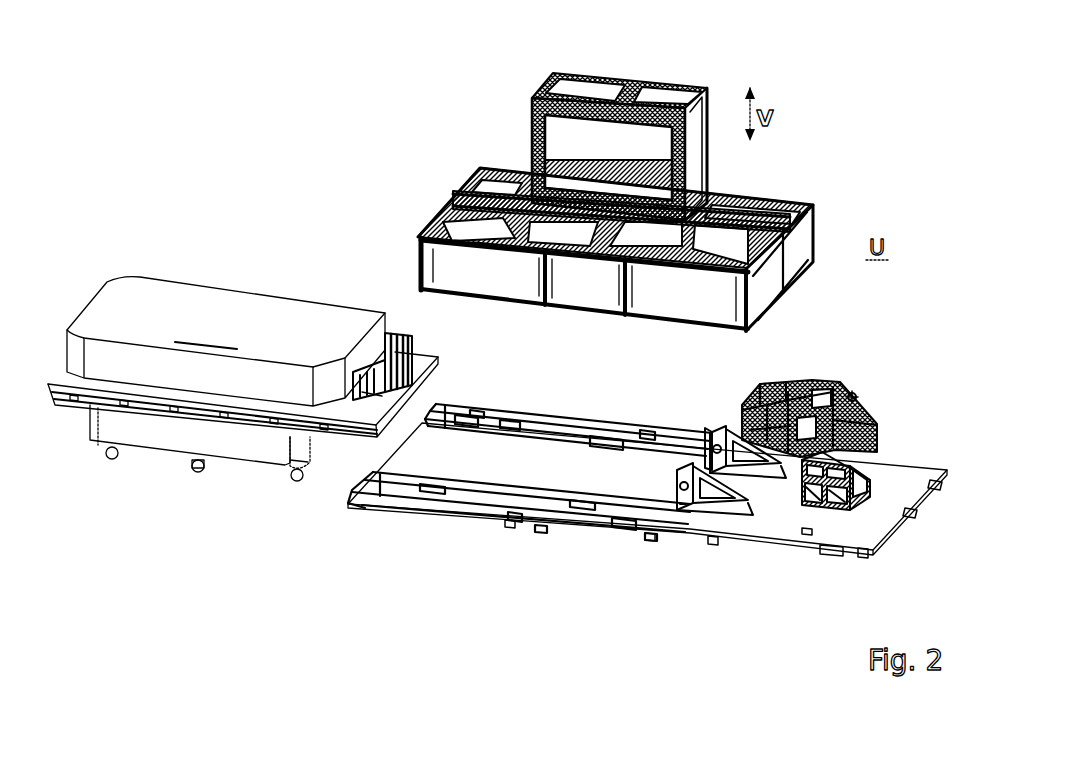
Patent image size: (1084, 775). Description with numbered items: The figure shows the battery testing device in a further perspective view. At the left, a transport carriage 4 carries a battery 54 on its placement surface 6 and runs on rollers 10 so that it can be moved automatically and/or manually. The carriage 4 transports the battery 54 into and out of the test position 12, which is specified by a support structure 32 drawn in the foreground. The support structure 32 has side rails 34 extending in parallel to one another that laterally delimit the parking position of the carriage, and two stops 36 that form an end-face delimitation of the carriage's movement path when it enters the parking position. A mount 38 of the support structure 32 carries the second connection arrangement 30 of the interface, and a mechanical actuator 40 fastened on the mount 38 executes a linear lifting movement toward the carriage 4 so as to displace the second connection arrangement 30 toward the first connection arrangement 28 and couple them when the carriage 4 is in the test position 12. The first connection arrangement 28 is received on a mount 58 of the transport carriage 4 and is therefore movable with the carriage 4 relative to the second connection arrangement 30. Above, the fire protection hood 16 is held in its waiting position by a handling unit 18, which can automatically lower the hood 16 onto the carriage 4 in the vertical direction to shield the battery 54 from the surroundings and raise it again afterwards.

The transport carriage 4 is at (272, 443).
The placement surface 6 is at (350, 400).
The rollers 10 is at (198, 473).
The test position 12 is at (608, 396).
The fire protection hood 16 is at (465, 224).
The handling unit 18 is at (620, 88).
The first connection arrangement 28 is at (421, 345).
The second connection arrangement 30 is at (793, 376).
The support structure 32 is at (554, 411).
The side rails 34 is at (572, 445).
The stops 36 is at (703, 430).
The mount 38 is at (800, 470).
The mechanical actuator 40 is at (853, 392).
The battery 54 is at (303, 327).
The mount 58 is at (372, 398).